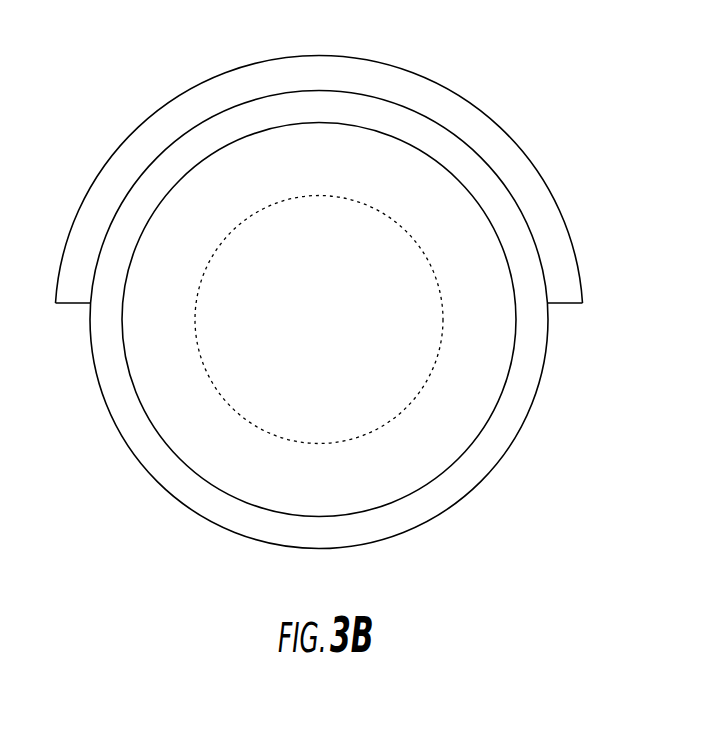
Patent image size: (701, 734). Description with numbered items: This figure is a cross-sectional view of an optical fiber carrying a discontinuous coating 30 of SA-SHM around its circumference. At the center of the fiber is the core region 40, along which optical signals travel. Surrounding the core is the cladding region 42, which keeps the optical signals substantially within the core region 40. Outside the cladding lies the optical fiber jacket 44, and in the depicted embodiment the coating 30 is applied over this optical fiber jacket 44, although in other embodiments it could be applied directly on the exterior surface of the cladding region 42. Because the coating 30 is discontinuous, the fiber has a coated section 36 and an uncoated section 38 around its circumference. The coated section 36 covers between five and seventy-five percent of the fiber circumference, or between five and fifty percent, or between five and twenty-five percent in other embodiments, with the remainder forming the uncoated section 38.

The SA-SHM coating 30 is at (346, 315).
The coated section 36 is at (537, 153).
The uncoated section 38 is at (492, 469).
The core region 40 is at (323, 325).
The cladding region 42 is at (478, 289).
The optical fiber jacket 44 is at (122, 400).